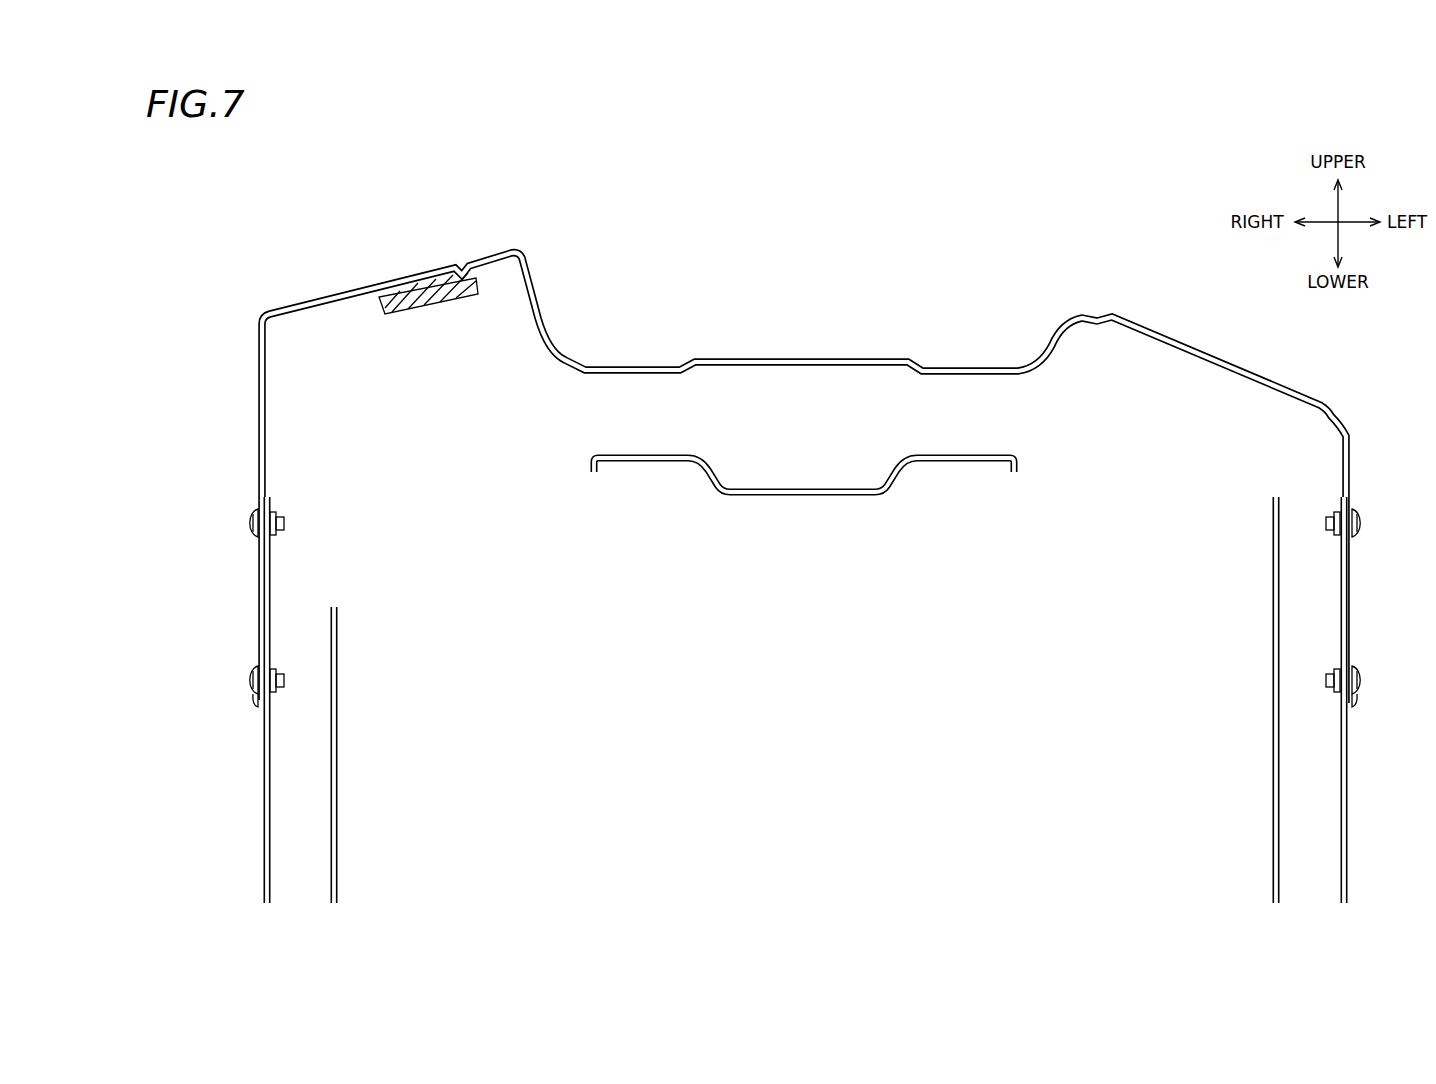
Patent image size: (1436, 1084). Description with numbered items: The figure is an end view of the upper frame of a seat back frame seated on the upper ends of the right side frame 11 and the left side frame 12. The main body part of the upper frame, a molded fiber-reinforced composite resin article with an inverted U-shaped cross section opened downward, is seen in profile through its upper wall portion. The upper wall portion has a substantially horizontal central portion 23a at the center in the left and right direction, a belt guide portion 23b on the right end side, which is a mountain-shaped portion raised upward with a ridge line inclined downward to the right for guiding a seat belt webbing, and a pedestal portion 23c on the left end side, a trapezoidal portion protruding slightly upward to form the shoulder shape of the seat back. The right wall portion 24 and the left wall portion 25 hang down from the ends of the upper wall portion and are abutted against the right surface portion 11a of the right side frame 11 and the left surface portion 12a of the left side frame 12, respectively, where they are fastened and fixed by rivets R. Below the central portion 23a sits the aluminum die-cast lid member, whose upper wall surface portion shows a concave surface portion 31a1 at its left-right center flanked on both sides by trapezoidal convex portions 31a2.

The central portion 23a is at (811, 357).
The belt guide portion 23b is at (345, 290).
The pedestal portion 23c is at (1211, 340).
The right wall portion 24 is at (258, 424).
The left wall portion 25 is at (1353, 475).
The right side frame 11 is at (262, 828).
The right surface portion 11a is at (262, 774).
The left side frame 12 is at (1350, 784).
The left surface portion 12a is at (1348, 742).
The rivet R is at (250, 683).
The concave surface portion 31a1 is at (815, 497).
The convex portion 31a2 is at (658, 462).